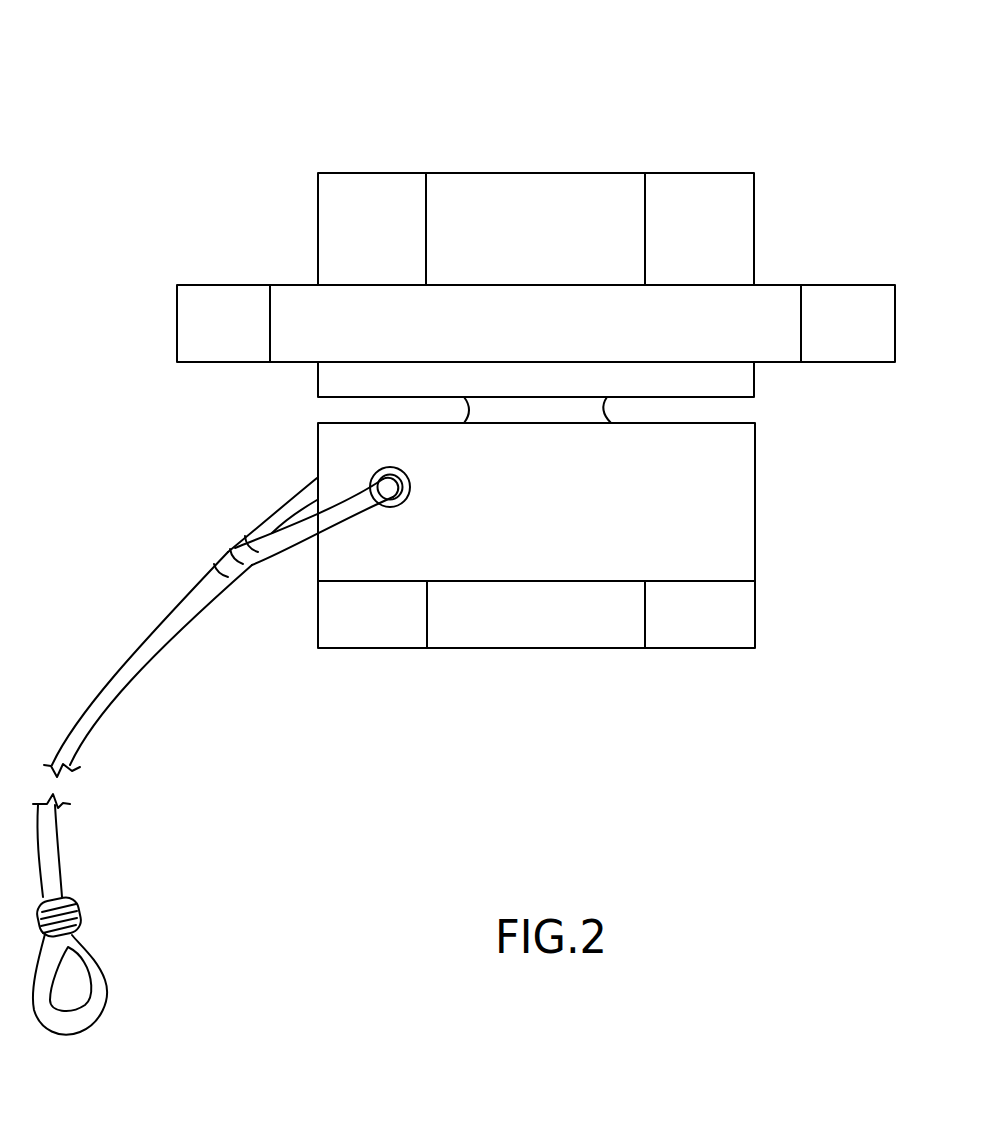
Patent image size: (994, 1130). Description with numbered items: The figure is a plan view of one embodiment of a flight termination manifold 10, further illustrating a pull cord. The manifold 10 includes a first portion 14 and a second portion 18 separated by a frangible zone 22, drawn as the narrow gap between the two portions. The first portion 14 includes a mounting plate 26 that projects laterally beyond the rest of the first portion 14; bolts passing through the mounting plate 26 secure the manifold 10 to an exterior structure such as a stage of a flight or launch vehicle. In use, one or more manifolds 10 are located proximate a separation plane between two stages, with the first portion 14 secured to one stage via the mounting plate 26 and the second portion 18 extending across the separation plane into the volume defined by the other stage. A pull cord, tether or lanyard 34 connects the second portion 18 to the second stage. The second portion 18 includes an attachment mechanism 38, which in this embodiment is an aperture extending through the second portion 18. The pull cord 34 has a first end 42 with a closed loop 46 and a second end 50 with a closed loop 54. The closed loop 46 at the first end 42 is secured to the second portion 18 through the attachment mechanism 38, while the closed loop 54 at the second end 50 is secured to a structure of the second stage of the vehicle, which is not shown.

The flight termination manifold 10 is at (339, 94).
The first portion 14 is at (906, 172).
The second portion 18 is at (818, 429).
The frangible zone 22 is at (583, 412).
The mounting plate 26 is at (183, 317).
The pull cord 34 is at (116, 678).
The attachment mechanism 38 is at (412, 485).
The first end 42 is at (292, 570).
The closed loop 46 is at (290, 493).
The second end 50 is at (105, 920).
The closed loop 54 is at (97, 1003).